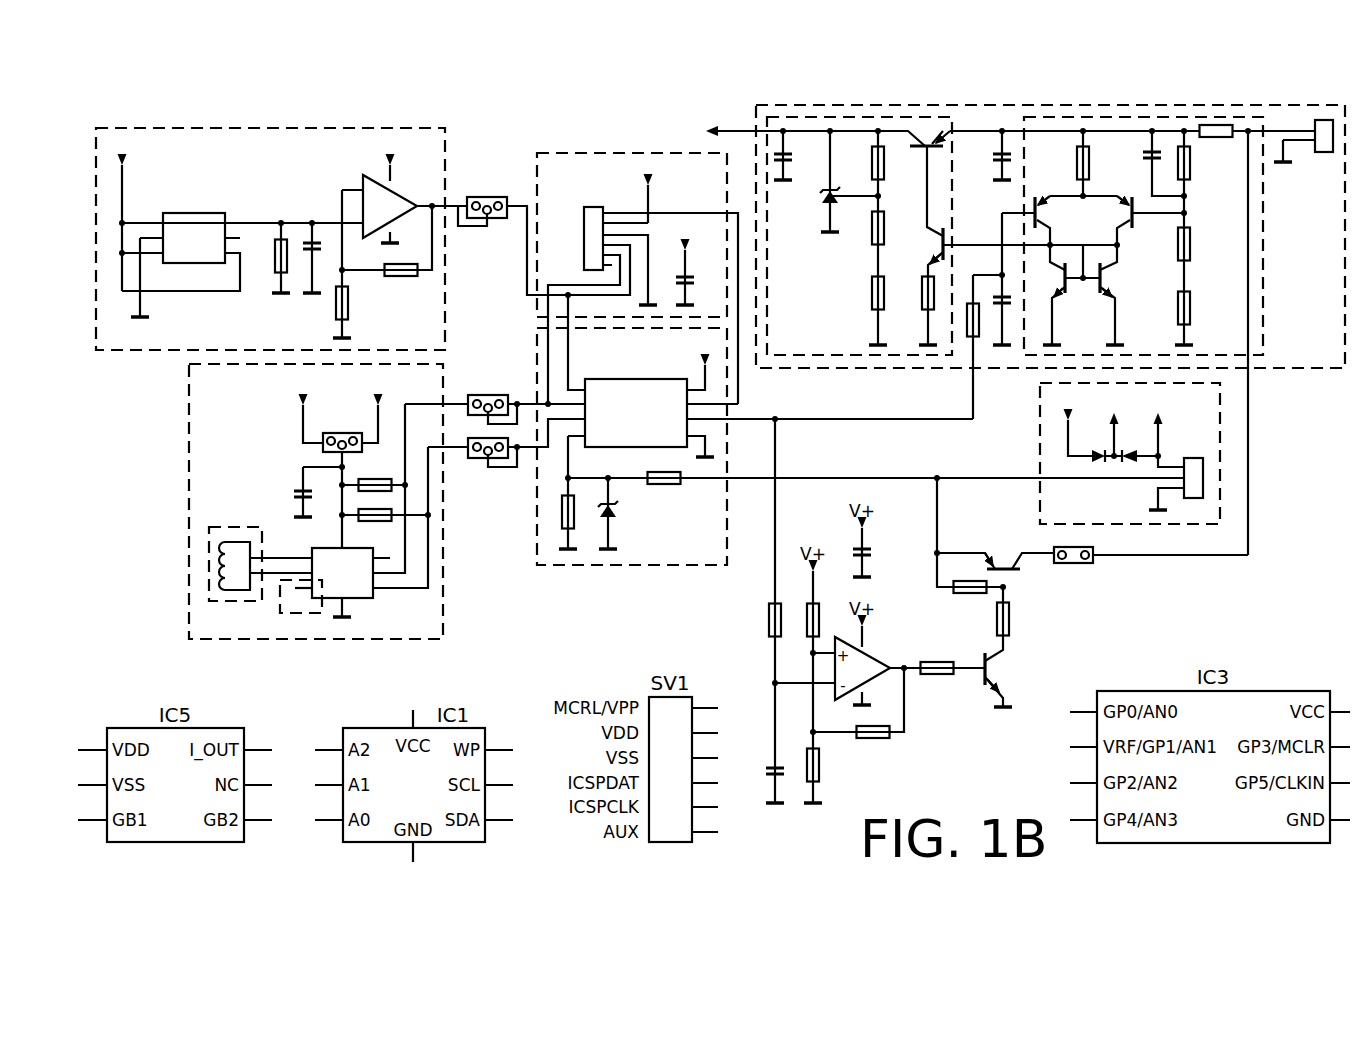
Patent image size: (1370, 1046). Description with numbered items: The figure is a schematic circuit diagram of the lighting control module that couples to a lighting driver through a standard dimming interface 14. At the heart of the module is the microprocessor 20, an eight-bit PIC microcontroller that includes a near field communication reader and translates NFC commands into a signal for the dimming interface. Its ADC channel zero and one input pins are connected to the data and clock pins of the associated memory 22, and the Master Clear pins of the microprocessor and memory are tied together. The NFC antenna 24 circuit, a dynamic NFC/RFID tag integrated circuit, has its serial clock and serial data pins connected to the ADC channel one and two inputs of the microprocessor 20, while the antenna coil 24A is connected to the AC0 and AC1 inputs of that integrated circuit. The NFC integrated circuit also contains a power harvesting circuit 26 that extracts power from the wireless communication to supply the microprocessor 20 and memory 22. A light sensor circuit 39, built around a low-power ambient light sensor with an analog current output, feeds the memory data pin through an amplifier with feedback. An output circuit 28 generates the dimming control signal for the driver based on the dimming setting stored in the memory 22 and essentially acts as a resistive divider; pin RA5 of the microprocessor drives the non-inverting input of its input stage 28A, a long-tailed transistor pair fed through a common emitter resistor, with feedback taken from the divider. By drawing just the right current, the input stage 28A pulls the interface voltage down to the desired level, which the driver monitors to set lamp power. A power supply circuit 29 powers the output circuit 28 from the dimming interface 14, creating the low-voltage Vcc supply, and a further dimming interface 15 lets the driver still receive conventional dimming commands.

The dimming interface 14 is at (737, 131).
The dimming interface 15 is at (1155, 524).
The microprocessor 20 is at (585, 565).
The memory 22 is at (622, 153).
The NFC antenna circuit 24 is at (189, 452).
The antenna coil 24A is at (209, 565).
The power harvesting circuit 26 is at (297, 613).
The output circuit 28 is at (985, 105).
The input stage 28A is at (1140, 117).
The power supply circuit 29 is at (850, 117).
The light sensor circuit 39 is at (270, 128).